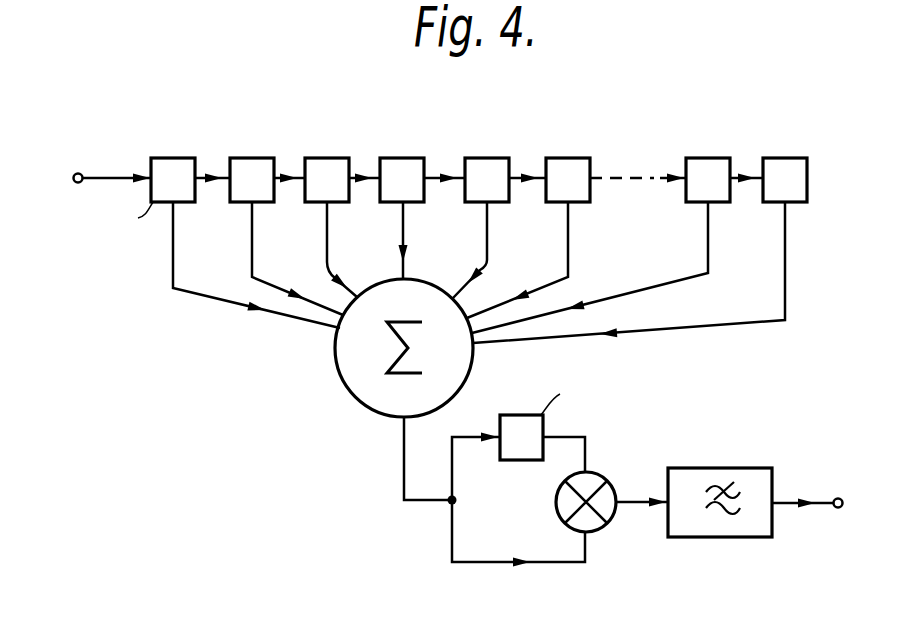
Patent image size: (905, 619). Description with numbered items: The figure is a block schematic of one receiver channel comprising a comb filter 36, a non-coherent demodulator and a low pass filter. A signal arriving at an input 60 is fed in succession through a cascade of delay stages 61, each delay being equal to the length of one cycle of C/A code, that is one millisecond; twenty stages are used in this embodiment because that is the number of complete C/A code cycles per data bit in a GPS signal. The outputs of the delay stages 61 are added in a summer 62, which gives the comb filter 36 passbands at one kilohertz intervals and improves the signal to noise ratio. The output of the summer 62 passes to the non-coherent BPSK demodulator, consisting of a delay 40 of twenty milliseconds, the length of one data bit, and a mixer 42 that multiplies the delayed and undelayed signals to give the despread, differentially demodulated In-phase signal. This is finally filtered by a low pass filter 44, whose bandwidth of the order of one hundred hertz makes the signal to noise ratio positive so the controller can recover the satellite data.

The input 60 is at (79, 174).
The delay stages 61 is at (182, 158).
The summer 62 is at (345, 382).
The comb filter 36 is at (334, 452).
The delay 40 is at (529, 415).
The mixer 42 is at (602, 476).
The low pass filter 44 is at (751, 468).